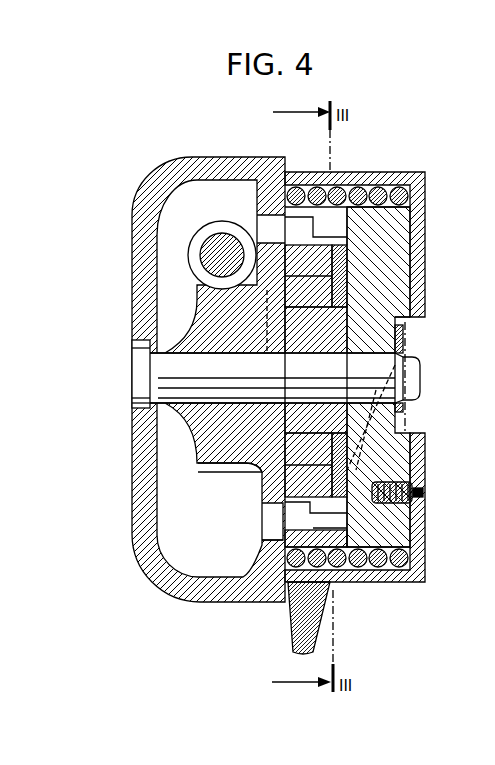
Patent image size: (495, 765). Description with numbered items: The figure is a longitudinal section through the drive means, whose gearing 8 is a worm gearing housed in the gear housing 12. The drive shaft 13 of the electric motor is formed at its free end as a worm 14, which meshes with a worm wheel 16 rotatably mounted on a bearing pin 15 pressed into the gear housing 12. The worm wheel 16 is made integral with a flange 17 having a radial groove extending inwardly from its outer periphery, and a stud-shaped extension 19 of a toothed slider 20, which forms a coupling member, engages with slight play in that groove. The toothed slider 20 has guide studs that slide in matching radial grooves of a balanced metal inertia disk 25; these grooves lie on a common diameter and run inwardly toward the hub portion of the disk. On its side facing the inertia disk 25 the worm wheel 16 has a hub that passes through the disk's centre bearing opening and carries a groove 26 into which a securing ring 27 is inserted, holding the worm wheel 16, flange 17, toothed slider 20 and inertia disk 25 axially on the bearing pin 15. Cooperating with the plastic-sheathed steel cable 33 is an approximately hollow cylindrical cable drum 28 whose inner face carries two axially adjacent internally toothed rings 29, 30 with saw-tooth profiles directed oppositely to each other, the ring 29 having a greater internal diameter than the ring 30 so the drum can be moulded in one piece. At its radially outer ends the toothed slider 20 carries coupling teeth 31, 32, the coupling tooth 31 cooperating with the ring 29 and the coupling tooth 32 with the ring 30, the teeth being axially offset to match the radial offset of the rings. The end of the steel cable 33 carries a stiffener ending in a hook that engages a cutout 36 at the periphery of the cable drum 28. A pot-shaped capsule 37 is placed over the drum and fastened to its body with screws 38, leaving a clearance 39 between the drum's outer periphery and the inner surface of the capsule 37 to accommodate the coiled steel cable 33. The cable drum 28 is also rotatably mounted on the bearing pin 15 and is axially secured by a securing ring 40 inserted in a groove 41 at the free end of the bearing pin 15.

The gearing 8 is at (122, 455).
The gear housing 12 is at (139, 553).
The drive shaft 13 is at (229, 240).
The worm 14 is at (207, 236).
The bearing pin 15 is at (138, 376).
The worm wheel 16 is at (200, 473).
The flange 17 is at (260, 474).
The stud-shaped extension 19 is at (278, 362).
The toothed slider 20 is at (273, 232).
The inertia disk 25 is at (400, 262).
The groove 26 is at (397, 316).
The securing ring 27 is at (347, 303).
The cable drum 28 is at (402, 525).
The internally toothed ring 29 is at (303, 222).
The internally toothed ring 30 is at (337, 191).
The coupling tooth 31 is at (262, 547).
The coupling tooth 32 is at (376, 174).
The plastic-sheathed steel cable 33 is at (292, 634).
The cutout 36 is at (407, 372).
The pot-shaped capsule 37 is at (417, 556).
The screws 38 is at (416, 483).
The clearance 39 is at (365, 572).
The securing ring 40 is at (405, 338).
The groove 41 is at (414, 390).